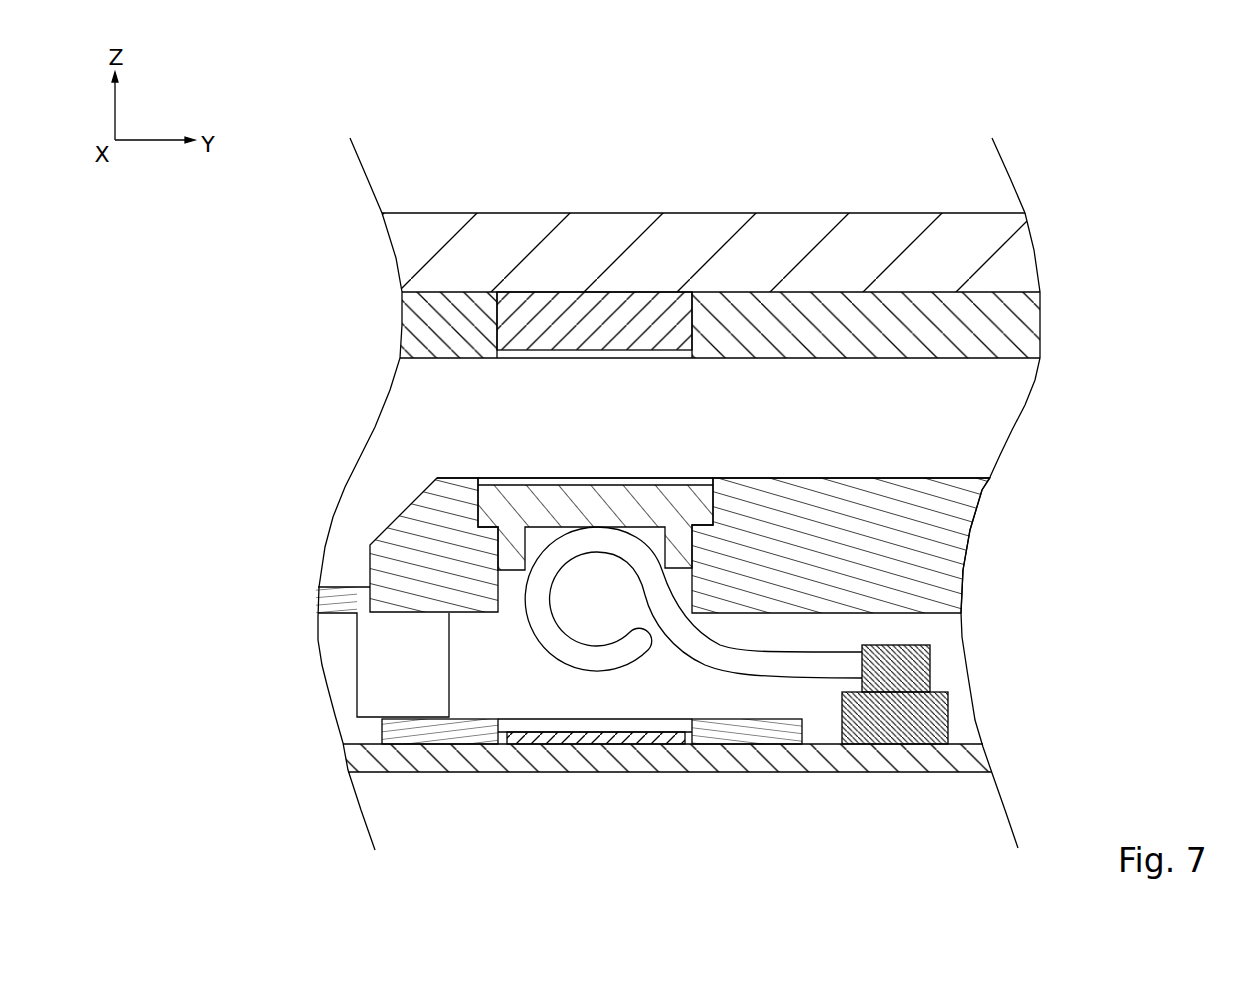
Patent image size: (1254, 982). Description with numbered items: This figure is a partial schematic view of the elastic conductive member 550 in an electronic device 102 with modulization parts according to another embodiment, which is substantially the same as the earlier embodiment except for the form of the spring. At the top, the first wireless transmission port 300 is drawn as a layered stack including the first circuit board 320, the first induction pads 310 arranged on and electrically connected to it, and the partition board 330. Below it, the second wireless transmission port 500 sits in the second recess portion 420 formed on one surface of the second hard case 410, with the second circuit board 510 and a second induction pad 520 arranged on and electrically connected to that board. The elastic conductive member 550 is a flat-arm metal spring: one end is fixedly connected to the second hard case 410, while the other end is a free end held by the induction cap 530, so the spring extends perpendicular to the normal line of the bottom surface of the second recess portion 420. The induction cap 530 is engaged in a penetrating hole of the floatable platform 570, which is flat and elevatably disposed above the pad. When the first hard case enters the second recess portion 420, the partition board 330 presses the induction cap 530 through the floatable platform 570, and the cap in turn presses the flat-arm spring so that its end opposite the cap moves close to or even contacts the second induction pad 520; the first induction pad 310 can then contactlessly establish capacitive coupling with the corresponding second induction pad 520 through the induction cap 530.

The electronic device 102 is at (1131, 60).
The first wireless transmission port 300 is at (655, 118).
The first induction pad 310 is at (752, 253).
The first circuit board 320 is at (657, 318).
The partition board 330 is at (805, 320).
The second hard case 410 is at (933, 757).
The second recess portion 420 is at (345, 673).
The second wireless transmission port 500 is at (825, 827).
The second circuit board 510 is at (627, 757).
The second induction pad 520 is at (673, 738).
The induction cap 530 is at (510, 553).
The elastic conductive member 550 is at (777, 665).
The floatable platform 570 is at (463, 575).